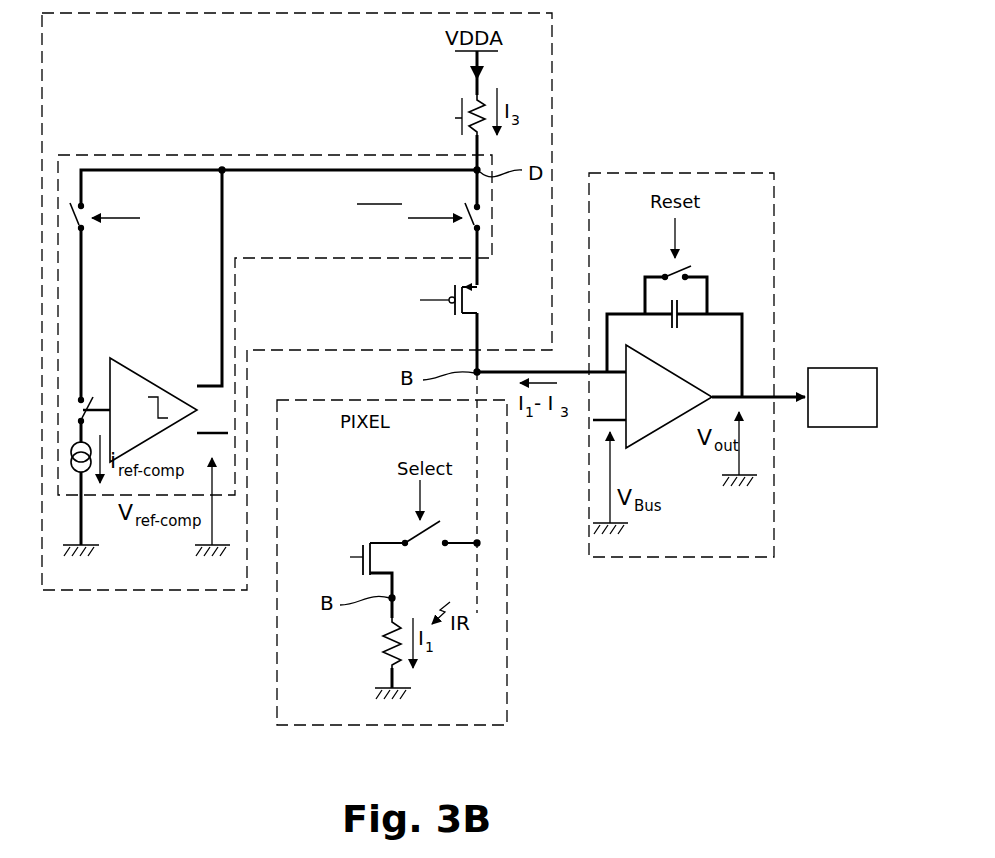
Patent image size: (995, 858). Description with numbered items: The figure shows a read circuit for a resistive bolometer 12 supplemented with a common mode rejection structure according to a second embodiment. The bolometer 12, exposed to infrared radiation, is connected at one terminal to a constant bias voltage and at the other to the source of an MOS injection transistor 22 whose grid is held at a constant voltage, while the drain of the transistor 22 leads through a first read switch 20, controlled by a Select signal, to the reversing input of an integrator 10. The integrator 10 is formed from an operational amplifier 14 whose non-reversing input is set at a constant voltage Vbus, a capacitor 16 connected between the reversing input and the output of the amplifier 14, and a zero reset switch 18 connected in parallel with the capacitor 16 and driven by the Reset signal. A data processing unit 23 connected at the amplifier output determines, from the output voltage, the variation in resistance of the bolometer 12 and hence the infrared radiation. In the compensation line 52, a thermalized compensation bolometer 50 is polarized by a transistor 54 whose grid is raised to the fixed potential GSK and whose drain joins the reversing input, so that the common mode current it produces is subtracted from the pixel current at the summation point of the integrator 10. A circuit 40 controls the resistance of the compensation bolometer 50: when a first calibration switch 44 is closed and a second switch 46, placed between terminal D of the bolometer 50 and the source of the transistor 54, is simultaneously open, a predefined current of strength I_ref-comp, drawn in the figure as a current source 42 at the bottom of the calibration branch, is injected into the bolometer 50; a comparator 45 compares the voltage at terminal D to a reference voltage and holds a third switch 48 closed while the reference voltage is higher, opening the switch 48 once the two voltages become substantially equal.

The compensation line 52 is at (552, 48).
The circuit for controlling the resistance of the compensation bolometer 40 is at (230, 155).
The first calibration switch 44 is at (78, 212).
The comparator 45 is at (164, 378).
The third switch 48 is at (81, 400).
The reference current source 42 is at (70, 465).
The compensation bolometer 50 is at (470, 98).
The second switch 46 is at (478, 215).
The transistor 54 is at (474, 300).
The integrator 10 is at (660, 172).
The zero reset switch 18 is at (690, 268).
The capacitor 16 is at (680, 322).
The operational amplifier 14 is at (645, 432).
The data processing unit 23 is at (842, 397).
The MOS injection transistor 22 is at (363, 544).
The first read switch 20 is at (425, 530).
The resistive bolometer 12 is at (385, 640).